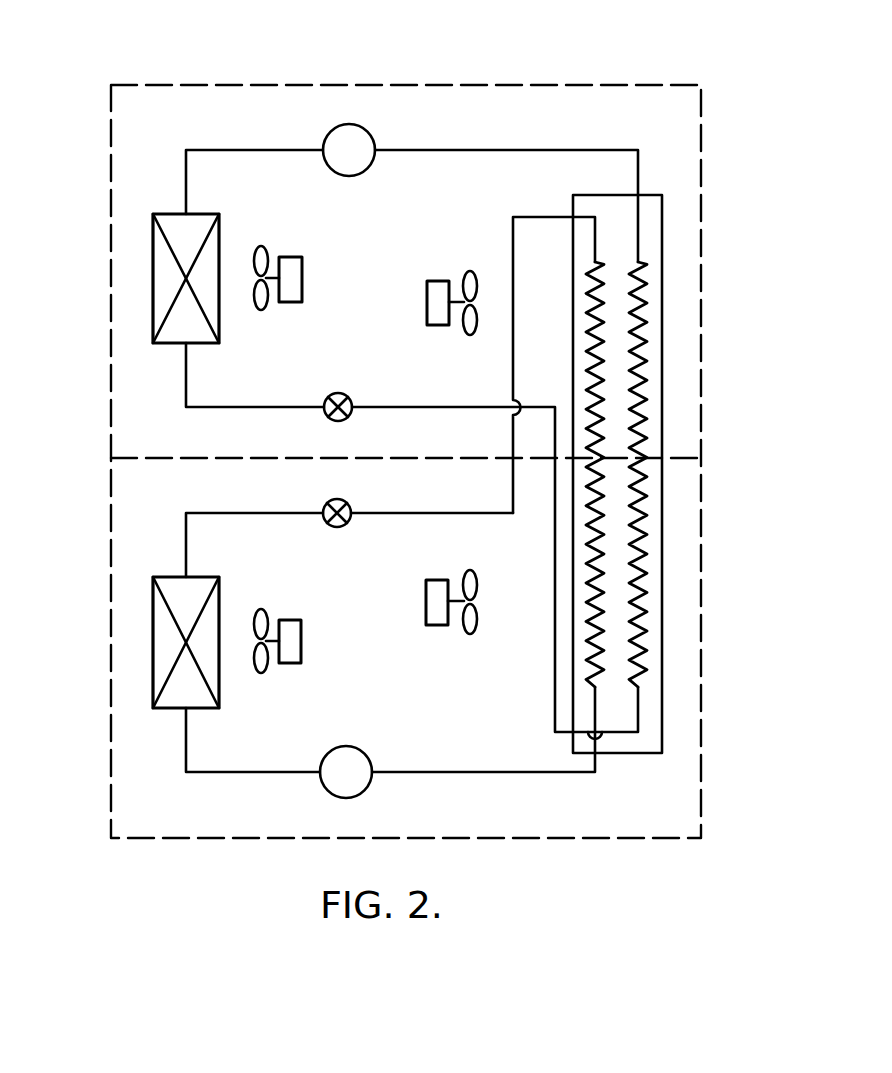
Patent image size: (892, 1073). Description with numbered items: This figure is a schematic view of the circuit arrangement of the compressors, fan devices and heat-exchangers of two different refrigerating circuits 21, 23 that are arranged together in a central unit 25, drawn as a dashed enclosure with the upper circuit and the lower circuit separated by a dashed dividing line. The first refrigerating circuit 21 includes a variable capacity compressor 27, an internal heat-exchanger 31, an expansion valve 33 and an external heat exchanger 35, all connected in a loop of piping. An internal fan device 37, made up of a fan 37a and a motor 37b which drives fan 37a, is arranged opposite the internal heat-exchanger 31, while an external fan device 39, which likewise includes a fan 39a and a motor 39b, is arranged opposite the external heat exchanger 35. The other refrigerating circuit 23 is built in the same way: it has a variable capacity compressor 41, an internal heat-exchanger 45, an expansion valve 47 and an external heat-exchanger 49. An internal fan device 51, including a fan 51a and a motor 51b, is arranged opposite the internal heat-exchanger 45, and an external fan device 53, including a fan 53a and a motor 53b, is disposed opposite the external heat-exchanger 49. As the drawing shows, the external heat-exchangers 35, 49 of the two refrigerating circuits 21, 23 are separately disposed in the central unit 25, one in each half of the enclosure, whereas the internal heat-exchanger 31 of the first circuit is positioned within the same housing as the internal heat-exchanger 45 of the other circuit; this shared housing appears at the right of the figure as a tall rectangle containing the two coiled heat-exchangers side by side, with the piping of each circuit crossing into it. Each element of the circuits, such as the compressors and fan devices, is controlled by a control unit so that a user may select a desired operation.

The refrigerating circuit 21 is at (258, 128).
The refrigerating circuit 23 is at (254, 787).
The central unit 25 is at (498, 92).
The variable capacity compressor 27 is at (372, 135).
The internal heat-exchanger 31 is at (653, 320).
The expansion valve 33 is at (352, 398).
The external heat exchanger 35 is at (158, 258).
The internal fan device 37 is at (433, 302).
The fan 37a is at (466, 330).
The motor 37b is at (430, 322).
The external fan device 39 is at (295, 291).
The fan 39a is at (256, 305).
The motor 39b is at (294, 298).
The variable capacity compressor 41 is at (358, 782).
The internal heat-exchanger 45 is at (613, 706).
The expansion valve 47 is at (348, 523).
The external heat-exchanger 49 is at (153, 642).
The internal fan device 51 is at (458, 601).
The fan 51a is at (468, 632).
The motor 51b is at (434, 622).
The external fan device 53 is at (298, 648).
The fan 53a is at (258, 672).
The motor 53b is at (295, 663).